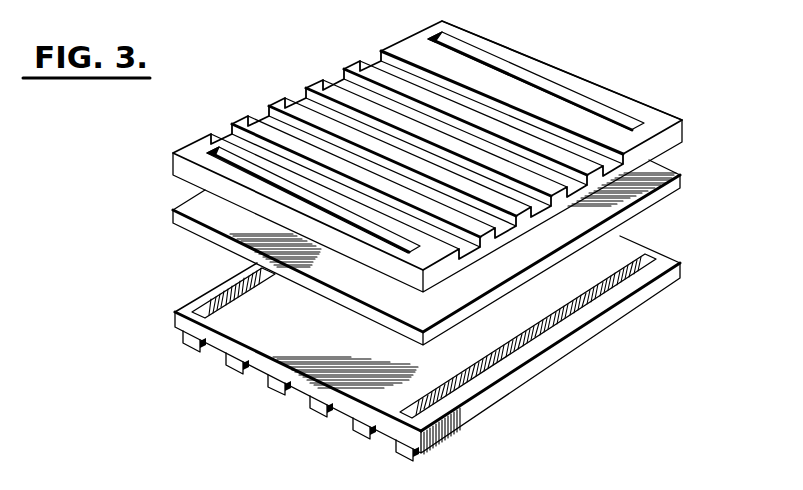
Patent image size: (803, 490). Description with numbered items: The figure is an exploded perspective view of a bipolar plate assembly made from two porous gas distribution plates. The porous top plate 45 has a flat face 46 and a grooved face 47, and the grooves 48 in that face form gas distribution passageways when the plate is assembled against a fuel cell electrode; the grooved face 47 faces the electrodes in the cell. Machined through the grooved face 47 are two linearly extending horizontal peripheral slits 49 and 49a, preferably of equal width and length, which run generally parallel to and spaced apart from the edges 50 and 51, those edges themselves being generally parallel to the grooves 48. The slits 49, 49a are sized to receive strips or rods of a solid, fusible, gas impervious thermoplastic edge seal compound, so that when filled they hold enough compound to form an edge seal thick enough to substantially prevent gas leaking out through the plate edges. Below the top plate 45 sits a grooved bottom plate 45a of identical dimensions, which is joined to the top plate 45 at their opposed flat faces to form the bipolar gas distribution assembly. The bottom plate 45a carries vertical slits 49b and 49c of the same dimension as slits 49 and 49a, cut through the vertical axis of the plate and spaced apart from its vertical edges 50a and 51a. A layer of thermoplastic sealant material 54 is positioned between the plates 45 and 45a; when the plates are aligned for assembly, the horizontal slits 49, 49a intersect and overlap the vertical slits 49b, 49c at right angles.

The porous top plate 45 is at (686, 120).
The bottom plate 45a is at (503, 402).
The flat face 46 is at (664, 142).
The grooved face 47 is at (447, 62).
The grooves 48 is at (367, 107).
The horizontal peripheral slit 49 is at (563, 86).
The horizontal peripheral slit 49a is at (227, 163).
The vertical slit 49b is at (589, 297).
The vertical slit 49c is at (203, 323).
The edge 50 is at (637, 98).
The vertical edge 50a is at (218, 283).
The edge 51 is at (245, 198).
The vertical edge 51a is at (555, 347).
The layer of thermoplastic sealant material 54 is at (667, 187).